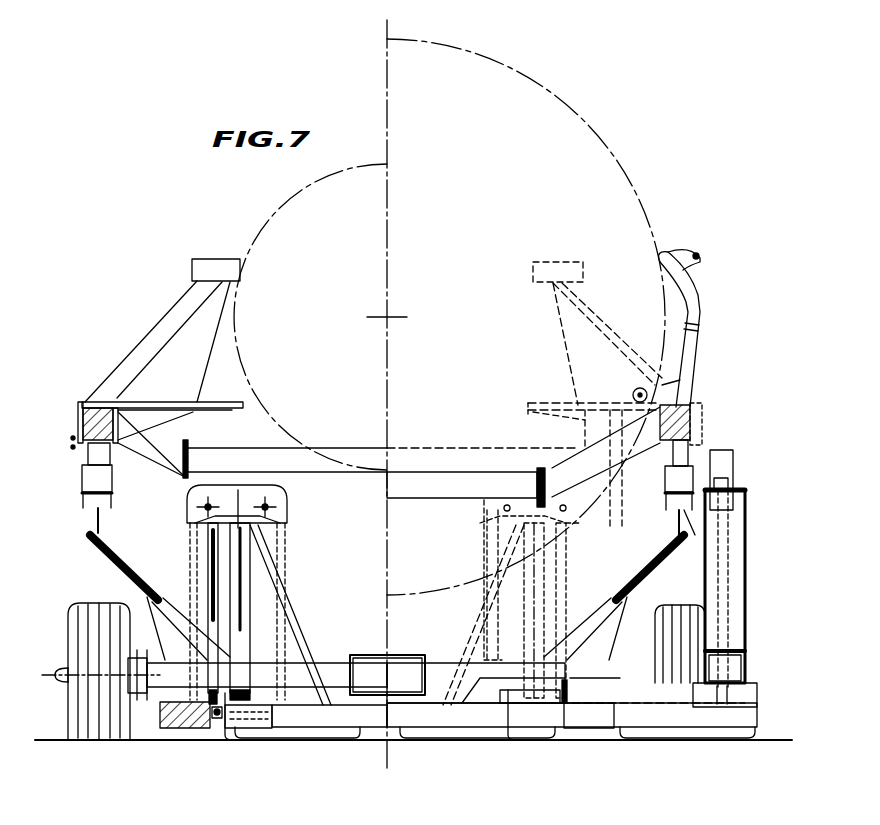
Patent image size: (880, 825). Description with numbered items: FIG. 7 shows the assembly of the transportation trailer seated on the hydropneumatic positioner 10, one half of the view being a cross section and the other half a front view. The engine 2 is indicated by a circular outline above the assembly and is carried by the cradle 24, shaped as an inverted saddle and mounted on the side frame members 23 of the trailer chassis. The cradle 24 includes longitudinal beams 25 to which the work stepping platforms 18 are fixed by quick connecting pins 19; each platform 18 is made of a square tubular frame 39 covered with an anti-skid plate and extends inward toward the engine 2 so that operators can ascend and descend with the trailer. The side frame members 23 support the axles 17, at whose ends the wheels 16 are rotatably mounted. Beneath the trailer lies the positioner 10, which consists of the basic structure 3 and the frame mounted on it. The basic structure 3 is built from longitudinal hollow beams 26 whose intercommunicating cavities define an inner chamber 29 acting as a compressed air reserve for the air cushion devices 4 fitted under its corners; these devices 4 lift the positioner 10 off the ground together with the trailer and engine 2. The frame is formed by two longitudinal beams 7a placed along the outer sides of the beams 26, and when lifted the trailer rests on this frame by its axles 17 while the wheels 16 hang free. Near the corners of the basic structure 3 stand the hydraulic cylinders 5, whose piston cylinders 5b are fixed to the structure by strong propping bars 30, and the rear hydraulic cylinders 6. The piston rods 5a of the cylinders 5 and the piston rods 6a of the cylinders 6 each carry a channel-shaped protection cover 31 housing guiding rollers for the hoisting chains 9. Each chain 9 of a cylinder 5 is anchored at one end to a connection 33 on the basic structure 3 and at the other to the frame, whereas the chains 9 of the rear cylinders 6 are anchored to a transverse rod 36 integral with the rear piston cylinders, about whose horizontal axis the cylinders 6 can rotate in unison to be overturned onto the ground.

The engine 2 is at (256, 222).
The basic structure 3 is at (428, 730).
The air cushion devices 4 is at (310, 730).
The hydraulic cylinders 5 is at (747, 600).
The piston rods 5a is at (729, 479).
The piston cylinders 5b is at (732, 634).
The rear hydraulic cylinders 6 is at (286, 612).
The piston rods 6a is at (222, 562).
The longitudinal beams 7a is at (182, 722).
The hoisting chains 9 is at (286, 545).
The hydropneumatic positioner 10 is at (312, 640).
The wheels 16 is at (96, 625).
The axles 17 is at (440, 673).
The work stepping platforms 18 is at (160, 401).
The quick connecting pins 19 is at (83, 455).
The side frame members 23 is at (100, 527).
The cradle 24 is at (136, 336).
The longitudinal beams 25 is at (89, 420).
The longitudinal hollow beams 26 is at (232, 728).
The inner chamber 29 is at (252, 720).
The propping bars 30 is at (642, 612).
The protection cover 31 is at (250, 494).
The connection 33 is at (742, 702).
The transverse rod 36 is at (345, 718).
The square tubular frame 39 is at (172, 432).